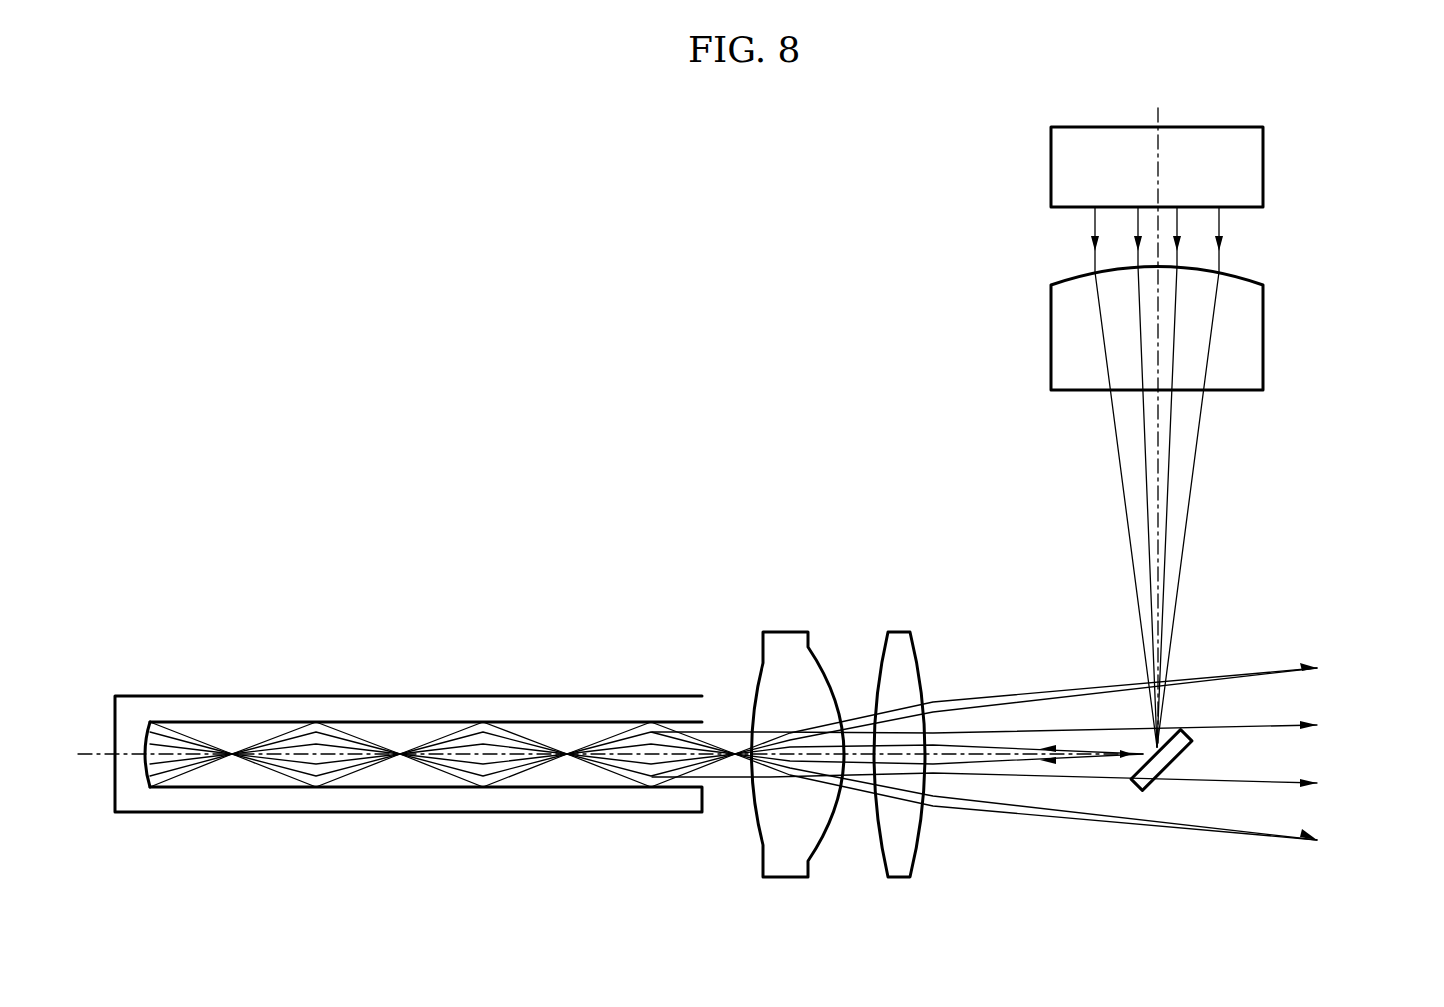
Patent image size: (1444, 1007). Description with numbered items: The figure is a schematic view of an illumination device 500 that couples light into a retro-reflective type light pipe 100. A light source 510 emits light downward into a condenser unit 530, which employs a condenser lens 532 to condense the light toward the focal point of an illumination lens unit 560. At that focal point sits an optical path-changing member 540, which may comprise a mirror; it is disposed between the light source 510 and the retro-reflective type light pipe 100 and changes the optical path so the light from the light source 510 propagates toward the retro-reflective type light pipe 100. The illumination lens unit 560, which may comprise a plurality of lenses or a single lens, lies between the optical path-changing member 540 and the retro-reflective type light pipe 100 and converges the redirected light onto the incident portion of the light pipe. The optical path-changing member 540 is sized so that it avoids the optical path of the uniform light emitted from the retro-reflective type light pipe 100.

The retro-reflective type light pipe 100 is at (139, 684).
The illumination device 500 is at (1300, 195).
The light source 510 is at (1058, 194).
The condenser unit 530 is at (1031, 320).
The condenser lens 532 is at (1065, 362).
The optical path-changing member 540 is at (1175, 750).
The illumination lens unit 560 is at (950, 610).